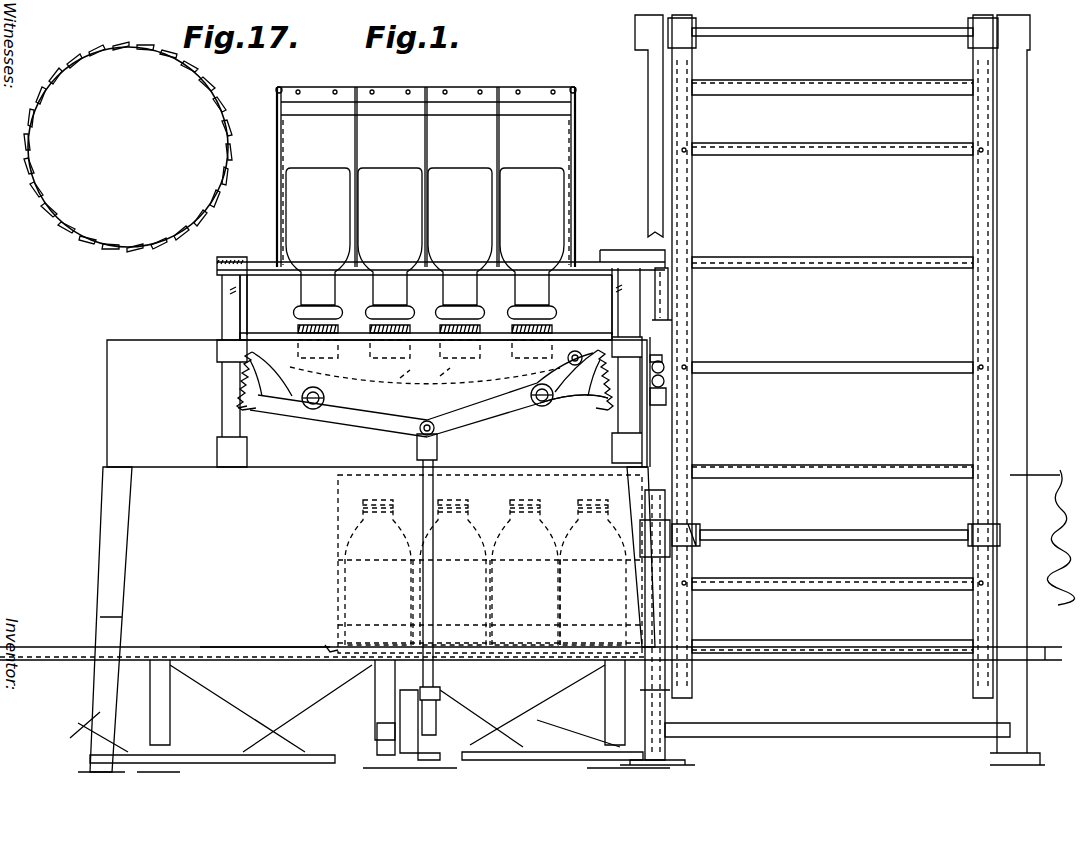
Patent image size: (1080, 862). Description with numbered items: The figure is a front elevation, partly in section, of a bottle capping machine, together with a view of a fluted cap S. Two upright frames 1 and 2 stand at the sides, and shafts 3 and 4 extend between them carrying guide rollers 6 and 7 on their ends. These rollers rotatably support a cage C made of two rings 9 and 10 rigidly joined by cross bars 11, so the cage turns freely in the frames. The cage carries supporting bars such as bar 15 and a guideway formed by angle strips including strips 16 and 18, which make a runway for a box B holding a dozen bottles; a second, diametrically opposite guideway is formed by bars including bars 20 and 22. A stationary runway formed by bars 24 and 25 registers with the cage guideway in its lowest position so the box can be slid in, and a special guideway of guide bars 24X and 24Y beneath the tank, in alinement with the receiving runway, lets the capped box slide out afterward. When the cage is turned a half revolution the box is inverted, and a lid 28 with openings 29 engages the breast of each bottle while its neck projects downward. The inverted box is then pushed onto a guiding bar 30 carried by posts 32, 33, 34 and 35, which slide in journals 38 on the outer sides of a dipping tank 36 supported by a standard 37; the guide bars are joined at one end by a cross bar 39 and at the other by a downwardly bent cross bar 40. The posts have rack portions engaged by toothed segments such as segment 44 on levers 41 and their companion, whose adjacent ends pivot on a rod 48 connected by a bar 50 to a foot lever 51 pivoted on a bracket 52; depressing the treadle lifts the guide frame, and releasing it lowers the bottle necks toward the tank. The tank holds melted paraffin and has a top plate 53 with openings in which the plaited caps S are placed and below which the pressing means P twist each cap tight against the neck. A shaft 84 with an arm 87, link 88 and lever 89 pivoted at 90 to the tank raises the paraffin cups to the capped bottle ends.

In FIG. 1, the upright frame 1 is at (1012, 142).
In FIG. 1, the upright frame 2 is at (645, 133).
In FIG. 1, the shaft 3 is at (842, 34).
In FIG. 1, the shaft 4 is at (846, 540).
In FIG. 1, the guide roller 6 is at (985, 30).
In FIG. 1, the guide roller 7 is at (696, 528).
In FIG. 1, the ring 9 is at (690, 245).
In FIG. 1, the ring 10 is at (975, 212).
In FIG. 1, the cross bar 11 is at (890, 156).
In FIG. 1, the supporting bar 15 is at (690, 427).
In FIG. 1, the angle strip 16 is at (845, 472).
In FIG. 1, the angle strip 18 is at (882, 653).
In FIG. 1, the bar 20 is at (835, 95).
In FIG. 1, the bar 22 is at (850, 262).
In FIG. 1, the bar 24 is at (1045, 647).
In FIG. 1, the guide bar 24X is at (240, 652).
In FIG. 1, the guide bar 24Y is at (328, 648).
In FIG. 1, the bar 25 is at (1055, 655).
In FIG. 1, the lid or plate 28 is at (278, 280).
In FIG. 1, the opening 29 is at (292, 276).
In FIG. 1, the guiding bar 30 is at (606, 262).
In FIG. 1, the post 32 is at (222, 318).
In FIG. 1, the post 33 is at (222, 294).
In FIG. 1, the post 34 is at (616, 318).
In FIG. 1, the post 35 is at (616, 292).
In FIG. 1, the dipping tank 36 is at (377, 403).
In FIG. 1, the standard 37 is at (118, 500).
In FIG. 1, the journal 38 is at (230, 352).
In FIG. 1, the cross bar 39 is at (215, 265).
In FIG. 1, the cross bar 40 is at (666, 303).
In FIG. 1, the lever 41 is at (472, 428).
In FIG. 1, the toothed segment 44 is at (258, 376).
In FIG. 1, the rod 48 is at (422, 487).
In FIG. 1, the bar 50 is at (428, 723).
In FIG. 1, the foot lever 51 is at (372, 728).
In FIG. 1, the bracket 52 is at (376, 735).
In FIG. 1, the top member or plate 53 is at (282, 333).
In FIG. 1, the shaft 84 is at (568, 360).
In FIG. 1, the arm 87 is at (664, 358).
In FIG. 1, the link 88 is at (665, 367).
In FIG. 1, the lever 89 is at (665, 382).
In FIG. 1, the pivot 90 is at (668, 398).
In FIG. 1, the box B is at (278, 152).
In FIG. 1, the cage C is at (734, 199).
In FIG. 1, the pressing or gripping means P is at (425, 366).
In FIG. 17, the plaited bottle cap S is at (48, 205).
In FIG. 1, the plaited bottle cap S is at (368, 325).